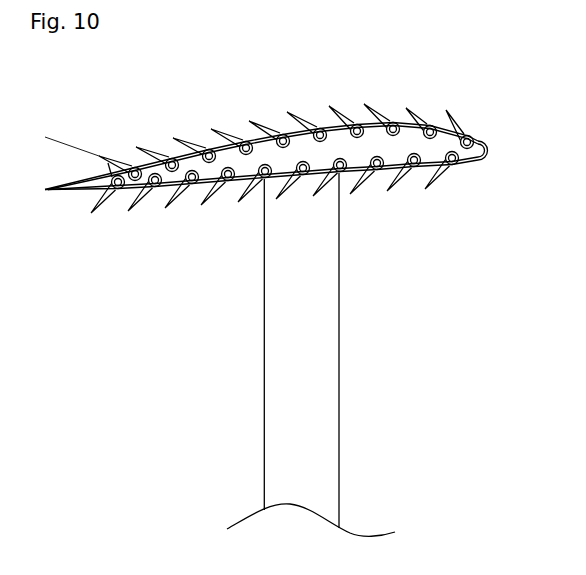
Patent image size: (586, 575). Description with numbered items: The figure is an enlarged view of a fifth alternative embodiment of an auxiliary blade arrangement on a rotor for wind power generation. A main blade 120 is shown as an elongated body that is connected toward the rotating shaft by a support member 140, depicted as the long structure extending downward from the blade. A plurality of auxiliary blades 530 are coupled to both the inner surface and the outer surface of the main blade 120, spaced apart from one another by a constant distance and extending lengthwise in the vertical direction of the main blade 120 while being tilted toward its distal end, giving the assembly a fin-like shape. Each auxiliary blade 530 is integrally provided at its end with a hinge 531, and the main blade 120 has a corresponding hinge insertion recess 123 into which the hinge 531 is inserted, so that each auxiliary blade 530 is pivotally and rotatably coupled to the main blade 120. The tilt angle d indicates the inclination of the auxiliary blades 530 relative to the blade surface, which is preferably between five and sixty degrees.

The main blade 120 is at (412, 121).
The hinge insertion recess 123 is at (366, 121).
The auxiliary blade 530 is at (282, 132).
The hinge 531 is at (322, 122).
The support member 140 is at (282, 373).
The tilt angle d is at (107, 163).